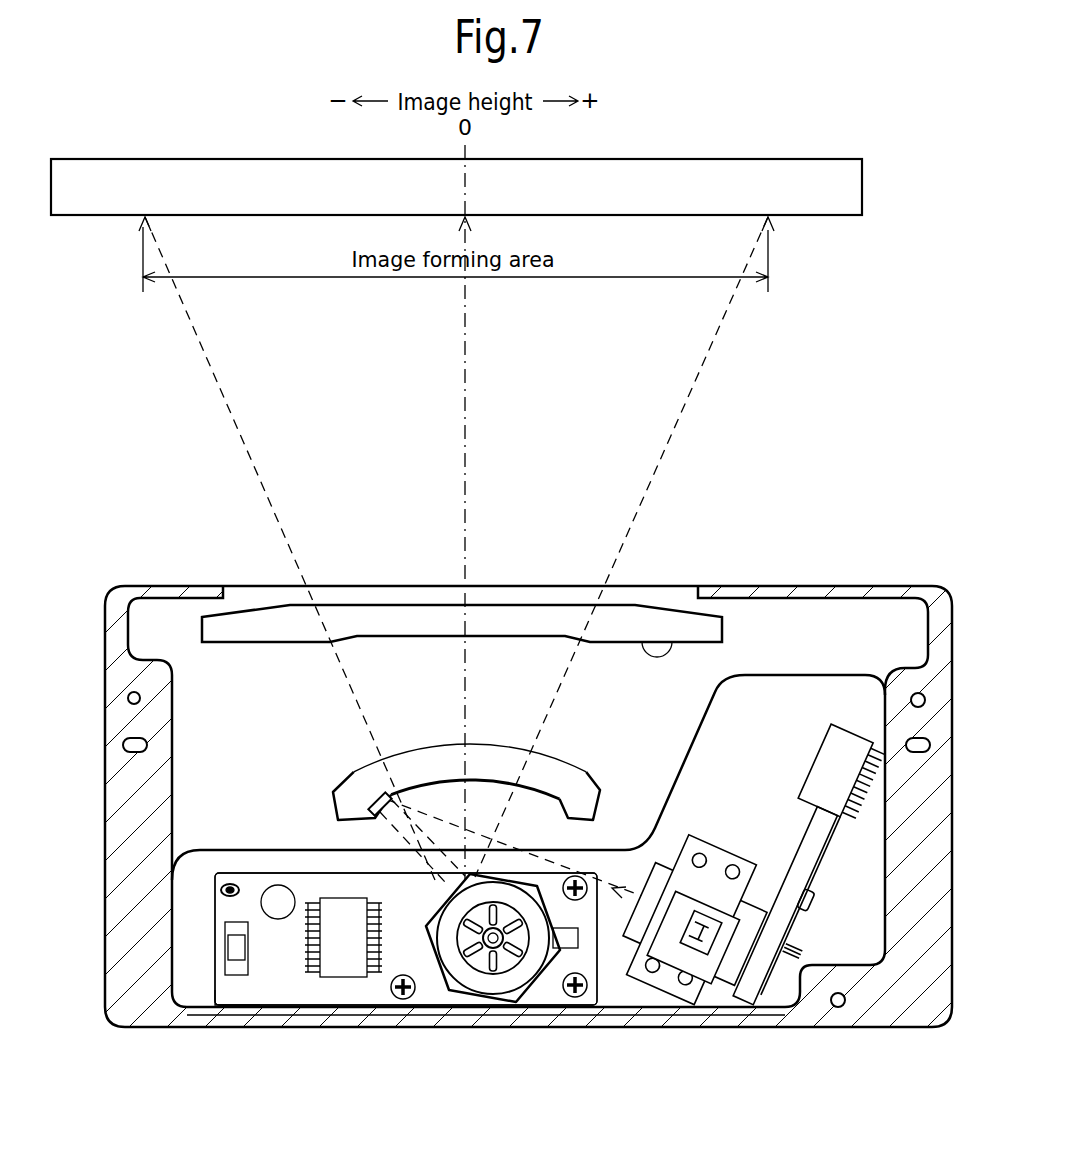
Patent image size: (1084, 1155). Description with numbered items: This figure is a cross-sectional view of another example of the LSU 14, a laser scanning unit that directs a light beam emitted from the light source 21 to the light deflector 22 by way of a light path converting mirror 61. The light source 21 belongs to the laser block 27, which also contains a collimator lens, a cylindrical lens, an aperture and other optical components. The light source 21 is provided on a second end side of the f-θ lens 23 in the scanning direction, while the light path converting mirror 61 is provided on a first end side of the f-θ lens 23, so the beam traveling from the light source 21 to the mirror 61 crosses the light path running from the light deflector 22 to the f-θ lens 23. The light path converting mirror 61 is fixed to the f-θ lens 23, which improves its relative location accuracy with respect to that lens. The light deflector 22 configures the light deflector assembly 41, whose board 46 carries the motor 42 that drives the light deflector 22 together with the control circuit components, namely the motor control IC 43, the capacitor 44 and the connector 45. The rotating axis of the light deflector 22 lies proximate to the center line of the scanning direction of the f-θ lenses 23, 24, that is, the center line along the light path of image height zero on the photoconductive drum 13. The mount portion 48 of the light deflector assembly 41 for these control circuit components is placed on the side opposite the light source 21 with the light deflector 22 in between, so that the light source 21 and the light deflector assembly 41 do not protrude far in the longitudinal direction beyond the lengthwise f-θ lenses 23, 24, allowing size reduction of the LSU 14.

The photoconductive drum 13 is at (740, 158).
The LSU 14 is at (175, 552).
The light source 21 is at (747, 950).
The light deflector 22 is at (462, 993).
The f-θ lens 23 is at (597, 812).
The f-θ lens 24 is at (672, 640).
The laser block 27 is at (718, 804).
The light deflector assembly 41 is at (386, 1020).
The motor 42 is at (537, 995).
The motor control IC 43 is at (338, 978).
The capacitor 44 is at (261, 903).
The connector 45 is at (225, 950).
The board 46 is at (245, 1005).
The mount portion 48 is at (248, 861).
The light path converting mirror 61 is at (348, 772).